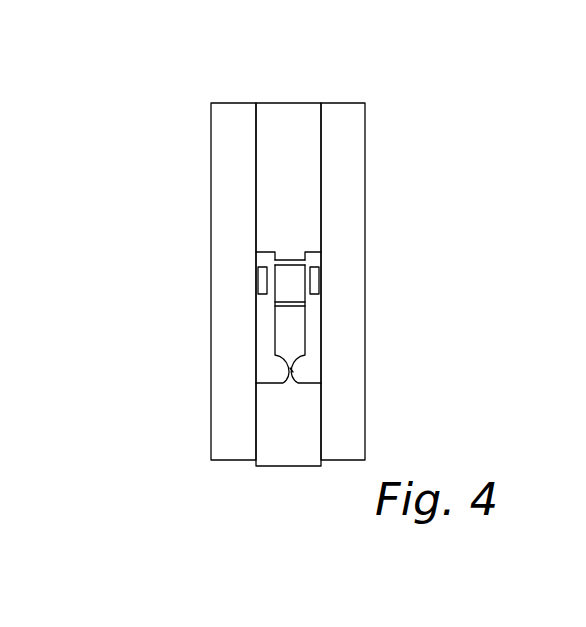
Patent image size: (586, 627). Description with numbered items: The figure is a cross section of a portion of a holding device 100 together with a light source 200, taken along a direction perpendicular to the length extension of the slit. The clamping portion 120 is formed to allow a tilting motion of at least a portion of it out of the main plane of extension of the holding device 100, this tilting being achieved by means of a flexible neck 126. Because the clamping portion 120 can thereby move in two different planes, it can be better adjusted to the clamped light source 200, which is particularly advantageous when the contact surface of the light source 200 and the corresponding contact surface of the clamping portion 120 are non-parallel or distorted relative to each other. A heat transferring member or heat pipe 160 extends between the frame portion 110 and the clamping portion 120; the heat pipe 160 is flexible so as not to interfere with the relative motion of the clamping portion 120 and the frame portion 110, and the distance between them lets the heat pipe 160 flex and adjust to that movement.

The holding device 100 is at (137, 50).
The frame portion 110 is at (296, 103).
The clamping portion 120 is at (305, 338).
The flexible neck 126 is at (293, 372).
The heat pipe 160 is at (211, 163).
The light source 200 is at (307, 268).